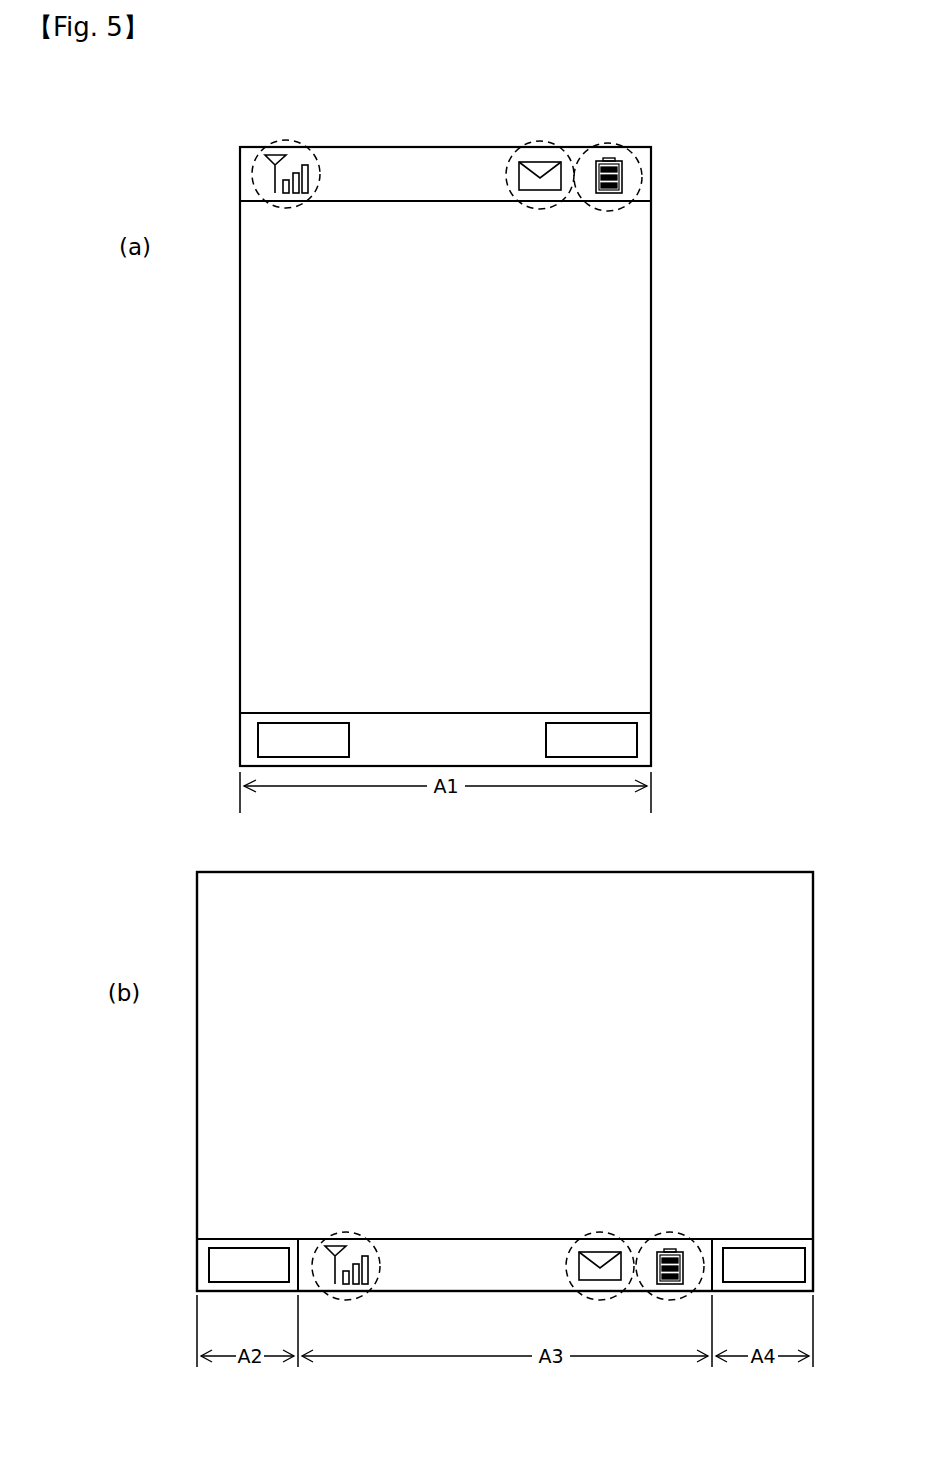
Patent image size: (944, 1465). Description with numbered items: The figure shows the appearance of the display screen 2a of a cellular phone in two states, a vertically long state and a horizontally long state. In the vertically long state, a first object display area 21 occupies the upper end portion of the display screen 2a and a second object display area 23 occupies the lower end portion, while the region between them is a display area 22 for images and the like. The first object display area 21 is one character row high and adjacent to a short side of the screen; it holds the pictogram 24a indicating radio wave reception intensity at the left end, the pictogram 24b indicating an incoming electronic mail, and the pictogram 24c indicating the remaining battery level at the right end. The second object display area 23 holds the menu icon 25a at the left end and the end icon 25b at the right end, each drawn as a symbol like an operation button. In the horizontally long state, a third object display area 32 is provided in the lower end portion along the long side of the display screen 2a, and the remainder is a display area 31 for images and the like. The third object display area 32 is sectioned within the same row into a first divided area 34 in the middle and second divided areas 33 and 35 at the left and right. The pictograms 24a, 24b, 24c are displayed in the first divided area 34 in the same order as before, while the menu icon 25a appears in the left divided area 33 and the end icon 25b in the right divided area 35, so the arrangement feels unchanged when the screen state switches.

The display screen 2a is at (387, 148).
The first object display area 21 is at (667, 148).
The display area 22 is at (667, 203).
The second object display area 23 is at (667, 714).
The pictogram 24a is at (288, 140).
The pictogram 24b is at (540, 140).
The pictogram 24c is at (610, 142).
The menu icon 25a is at (316, 722).
The end icon 25b is at (604, 722).
The display area 31 is at (822, 873).
The third object display area 32 is at (822, 1240).
The second divided area 33 is at (297, 1299).
The first divided area 34 is at (300, 1299).
The second divided area 35 is at (812, 1299).